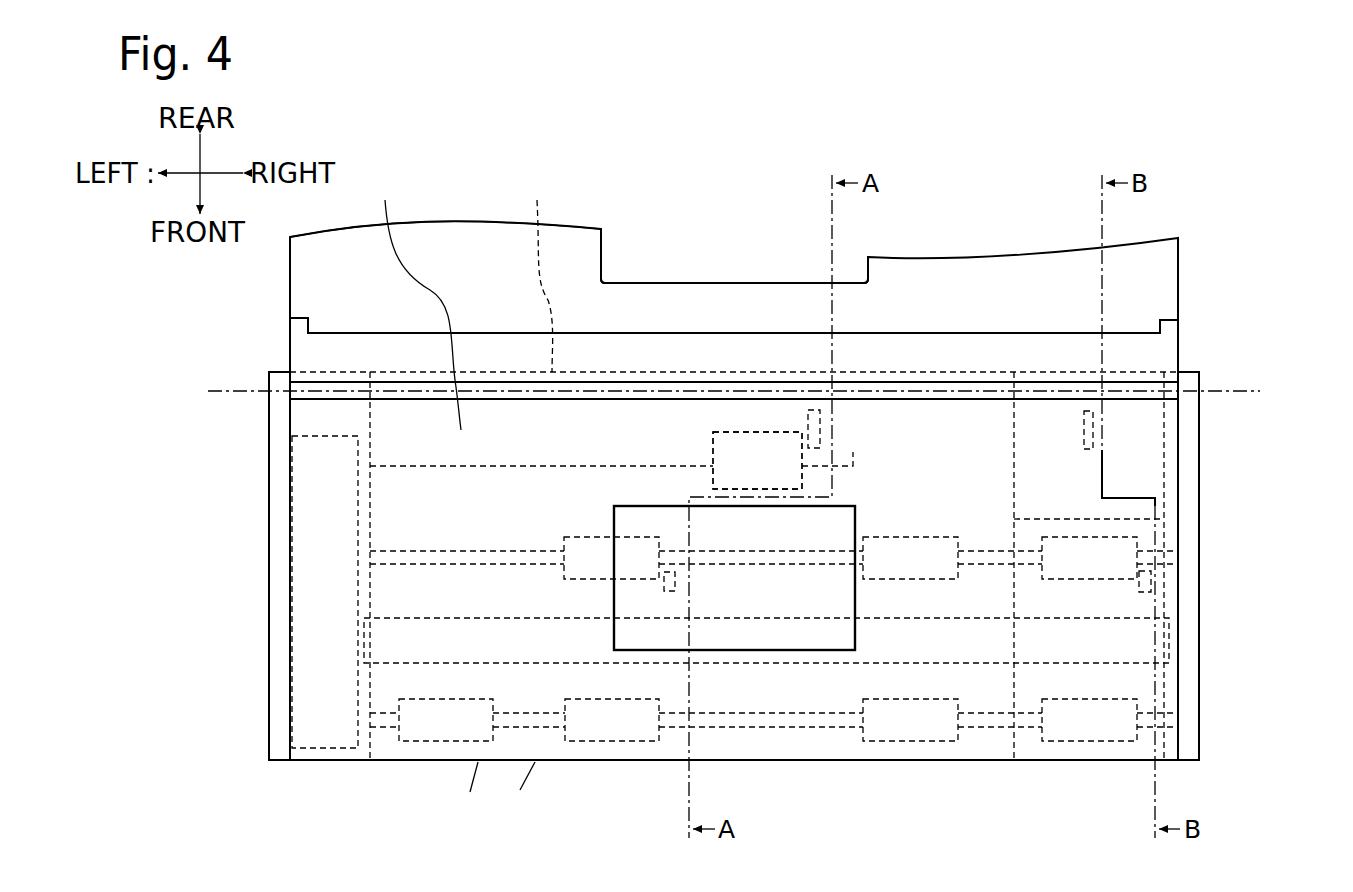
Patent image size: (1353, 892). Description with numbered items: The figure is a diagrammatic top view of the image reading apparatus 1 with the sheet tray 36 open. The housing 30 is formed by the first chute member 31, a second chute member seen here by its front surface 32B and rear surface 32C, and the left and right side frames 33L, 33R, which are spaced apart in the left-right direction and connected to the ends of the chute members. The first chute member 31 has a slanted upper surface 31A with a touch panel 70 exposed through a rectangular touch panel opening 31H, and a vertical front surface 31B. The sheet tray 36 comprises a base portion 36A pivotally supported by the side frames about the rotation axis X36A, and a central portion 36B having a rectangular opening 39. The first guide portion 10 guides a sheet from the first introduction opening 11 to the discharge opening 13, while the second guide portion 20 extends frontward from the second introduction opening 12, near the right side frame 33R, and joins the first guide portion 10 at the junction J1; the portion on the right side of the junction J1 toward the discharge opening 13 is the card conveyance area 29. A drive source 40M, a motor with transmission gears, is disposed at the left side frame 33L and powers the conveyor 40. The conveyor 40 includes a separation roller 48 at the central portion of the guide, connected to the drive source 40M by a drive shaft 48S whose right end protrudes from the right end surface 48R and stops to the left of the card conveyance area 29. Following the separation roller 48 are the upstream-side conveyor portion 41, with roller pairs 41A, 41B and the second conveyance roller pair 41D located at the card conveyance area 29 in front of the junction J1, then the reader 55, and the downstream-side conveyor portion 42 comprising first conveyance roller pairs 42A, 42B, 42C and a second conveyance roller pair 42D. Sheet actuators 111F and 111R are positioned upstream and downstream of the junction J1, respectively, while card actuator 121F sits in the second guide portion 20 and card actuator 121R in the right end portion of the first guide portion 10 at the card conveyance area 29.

The image reading apparatus 1 is at (1289, 215).
The first guide portion 10 is at (378, 519).
The first introduction opening 11 is at (938, 392).
The second introduction opening 12 is at (1157, 367).
The discharge opening 13 is at (816, 767).
The second guide portion 20 is at (1028, 430).
The card conveyance area 29 is at (1026, 690).
The housing 30 is at (1215, 577).
The first chute member 31 is at (316, 416).
The upper surface 31A is at (414, 300).
The front surface 31B is at (458, 792).
The touch panel opening 31H is at (858, 525).
The front surface 32B is at (518, 792).
The rear surface 32C is at (542, 271).
The left side frame 33L is at (266, 649).
The right side frame 33R is at (1205, 713).
The sheet tray 36 is at (1183, 270).
The base portion 36A is at (290, 345).
The central portion 36B is at (292, 277).
The opening 39 is at (602, 255).
The conveyor 40 is at (750, 415).
The drive source 40M is at (325, 702).
The upstream-side conveyor portion 41 is at (558, 540).
The connector 41A is at (611, 558).
The connector 41B is at (910, 558).
The second conveyance roller pair 41D is at (1089, 558).
The downstream-side conveyor portion 42 is at (641, 750).
The first conveyance roller pair 42A is at (612, 720).
The first conveyance roller pair 42B is at (910, 720).
The first conveyance roller pair 42C is at (446, 720).
The second conveyance roller pair 42D is at (1089, 720).
The separation roller 48 is at (727, 437).
The right end surface 48R is at (805, 481).
The drive shaft 48S is at (606, 458).
The reader 55 is at (1143, 640).
The touch panel 70 is at (734, 578).
The actuator 111F is at (815, 405).
The actuator 111R is at (660, 583).
The actuator 121F is at (1082, 438).
The actuator 121R is at (1137, 585).
The junction J1 is at (1166, 519).
The rotation axis X36A is at (763, 391).